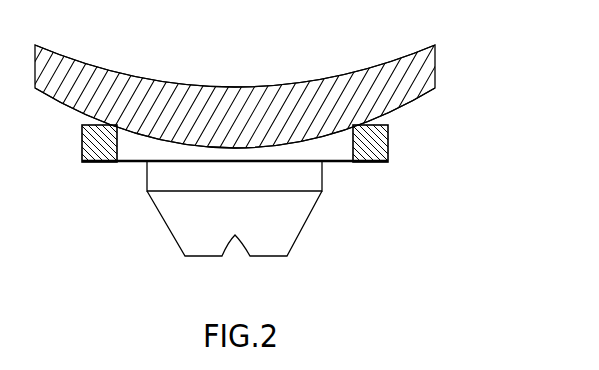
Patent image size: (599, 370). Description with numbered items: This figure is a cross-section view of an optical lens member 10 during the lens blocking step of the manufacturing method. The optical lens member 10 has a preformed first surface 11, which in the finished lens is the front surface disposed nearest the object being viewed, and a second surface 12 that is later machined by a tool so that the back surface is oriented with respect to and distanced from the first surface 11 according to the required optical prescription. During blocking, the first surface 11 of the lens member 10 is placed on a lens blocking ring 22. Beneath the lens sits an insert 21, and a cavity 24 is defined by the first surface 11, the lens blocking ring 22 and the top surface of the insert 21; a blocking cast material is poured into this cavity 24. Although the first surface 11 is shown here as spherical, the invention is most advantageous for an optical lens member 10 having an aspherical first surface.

The optical lens member 10 is at (436, 64).
The first surface 11 is at (418, 94).
The second surface 12 is at (365, 68).
The insert 21 is at (283, 212).
The lens blocking ring 22 is at (375, 145).
The cavity 24 is at (137, 148).